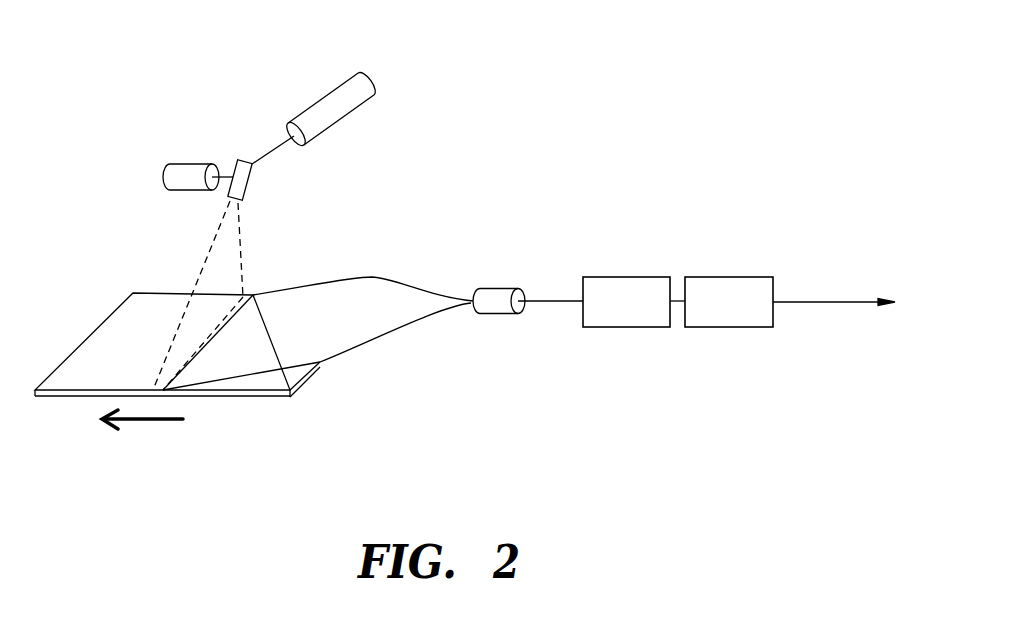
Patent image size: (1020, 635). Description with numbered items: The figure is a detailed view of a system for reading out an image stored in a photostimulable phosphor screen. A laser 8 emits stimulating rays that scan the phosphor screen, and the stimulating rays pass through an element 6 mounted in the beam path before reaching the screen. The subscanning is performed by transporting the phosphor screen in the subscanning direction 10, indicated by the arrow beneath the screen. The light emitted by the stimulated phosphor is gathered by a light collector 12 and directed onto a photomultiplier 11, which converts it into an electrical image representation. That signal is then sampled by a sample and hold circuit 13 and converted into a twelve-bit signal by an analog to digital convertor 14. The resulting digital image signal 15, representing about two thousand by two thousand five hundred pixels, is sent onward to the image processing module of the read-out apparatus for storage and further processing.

The beam splitter / detector head 6 is at (243, 160).
The laser 8 is at (335, 92).
The subscanning direction 10 is at (63, 397).
The photomultiplier 11 is at (500, 293).
The light collector 12 is at (365, 283).
The sample and hold circuit 13 is at (649, 283).
The analog to digital convertor 14 is at (750, 283).
The digital image signal 15 is at (824, 302).